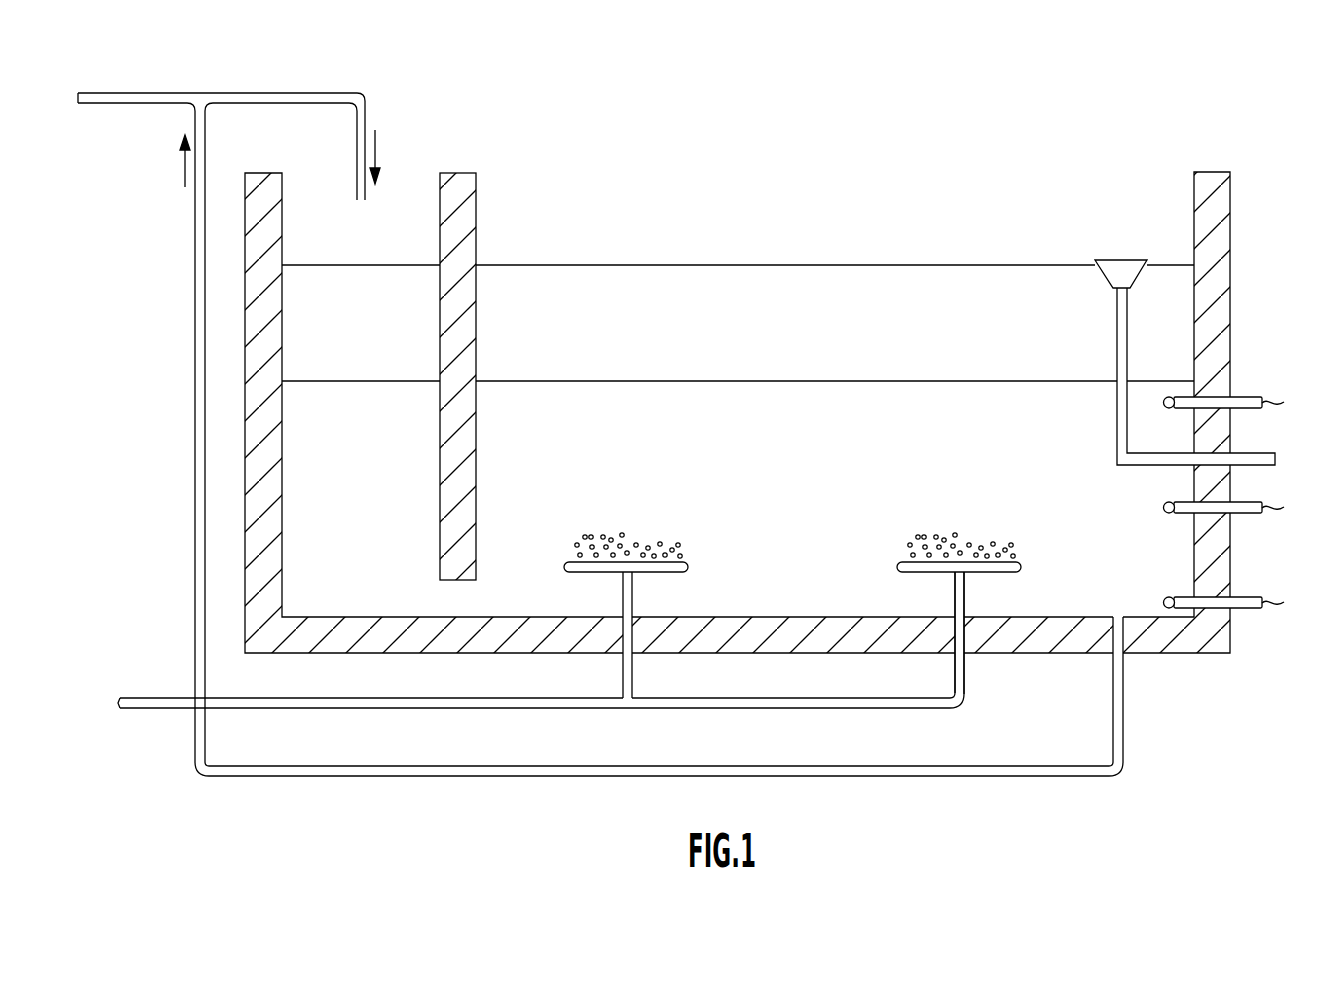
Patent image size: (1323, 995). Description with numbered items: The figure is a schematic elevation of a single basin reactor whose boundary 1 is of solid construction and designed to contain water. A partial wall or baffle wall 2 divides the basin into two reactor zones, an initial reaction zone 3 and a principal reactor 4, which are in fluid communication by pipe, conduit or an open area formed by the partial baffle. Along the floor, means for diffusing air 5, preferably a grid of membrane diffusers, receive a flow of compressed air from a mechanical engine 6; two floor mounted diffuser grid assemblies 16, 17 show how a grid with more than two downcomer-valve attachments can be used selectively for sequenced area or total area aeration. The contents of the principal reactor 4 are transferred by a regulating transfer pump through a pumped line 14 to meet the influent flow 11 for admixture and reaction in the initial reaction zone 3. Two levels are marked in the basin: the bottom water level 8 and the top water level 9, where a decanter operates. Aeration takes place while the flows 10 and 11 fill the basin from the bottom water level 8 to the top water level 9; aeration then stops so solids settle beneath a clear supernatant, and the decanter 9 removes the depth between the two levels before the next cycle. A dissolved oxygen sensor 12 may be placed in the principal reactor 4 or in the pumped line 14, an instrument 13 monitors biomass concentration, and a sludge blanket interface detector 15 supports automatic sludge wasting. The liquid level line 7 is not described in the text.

The reactor basin boundary 1 is at (1225, 268).
The baffle wall 2 is at (463, 193).
The initial reaction zone 3 is at (363, 478).
The principal reactor 4 is at (783, 478).
The means for diffusing air 5 is at (1088, 543).
The mechanical engine 6 is at (325, 708).
The upper liquid level 7 is at (575, 265).
The bottom water level 8 is at (588, 381).
The top water level decanter 9 is at (1122, 258).
The transfer flow 10 is at (1123, 685).
The influent flow 11 is at (165, 102).
The dissolved oxygen sensor 12 is at (1250, 500).
The biomass concentration monitoring instrument 13 is at (1248, 595).
The pumped line 14 is at (195, 202).
The sludge blanket interface detector 15 is at (1243, 395).
The diffuser grid assembly 16 is at (920, 570).
The diffuser grid assembly 17 is at (670, 572).